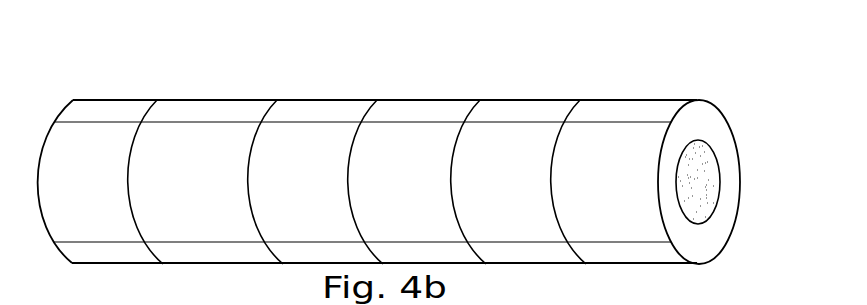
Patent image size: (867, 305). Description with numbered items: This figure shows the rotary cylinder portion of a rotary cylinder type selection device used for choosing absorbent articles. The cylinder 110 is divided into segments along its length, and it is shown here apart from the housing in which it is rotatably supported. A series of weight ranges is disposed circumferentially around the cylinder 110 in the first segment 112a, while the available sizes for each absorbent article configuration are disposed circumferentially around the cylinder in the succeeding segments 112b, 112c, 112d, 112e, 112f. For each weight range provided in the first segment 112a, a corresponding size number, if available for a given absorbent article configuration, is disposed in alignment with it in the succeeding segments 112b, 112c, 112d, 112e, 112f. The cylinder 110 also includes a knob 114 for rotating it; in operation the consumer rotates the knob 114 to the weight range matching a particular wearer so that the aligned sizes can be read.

The cylinder 110 is at (414, 161).
The first segment 112a is at (158, 108).
The succeeding segment 112b is at (259, 110).
The succeeding segment 112c is at (360, 110).
The succeeding segment 112d is at (462, 110).
The succeeding segment 112e is at (563, 110).
The succeeding segment 112f is at (672, 108).
The knob 114 is at (708, 177).